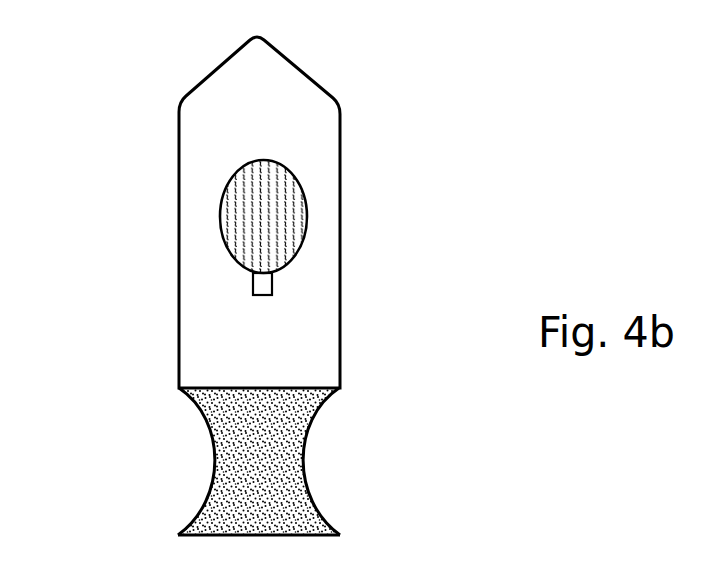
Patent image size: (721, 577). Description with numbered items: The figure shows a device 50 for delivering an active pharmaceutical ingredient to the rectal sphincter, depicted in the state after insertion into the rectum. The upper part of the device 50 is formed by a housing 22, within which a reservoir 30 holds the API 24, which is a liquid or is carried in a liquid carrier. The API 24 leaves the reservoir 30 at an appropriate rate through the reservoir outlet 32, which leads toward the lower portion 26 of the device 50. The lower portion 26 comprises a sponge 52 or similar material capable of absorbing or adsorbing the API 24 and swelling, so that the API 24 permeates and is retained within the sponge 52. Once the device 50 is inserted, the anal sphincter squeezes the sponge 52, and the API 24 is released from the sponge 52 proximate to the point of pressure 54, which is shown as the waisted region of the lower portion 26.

The device 50 is at (459, 127).
The housing body 22 is at (340, 282).
The reservoir 30 is at (301, 182).
The API 24 is at (238, 199).
The reservoir outlet 32 is at (253, 287).
The lower portion 26 is at (283, 461).
The sponge 52 is at (304, 520).
The point of pressure 54 is at (149, 463).